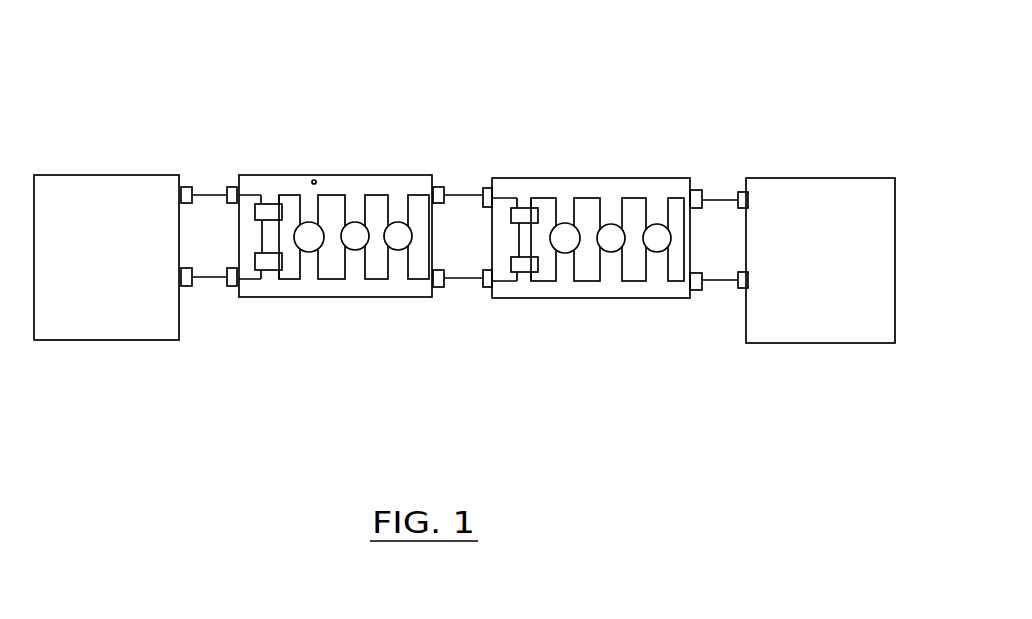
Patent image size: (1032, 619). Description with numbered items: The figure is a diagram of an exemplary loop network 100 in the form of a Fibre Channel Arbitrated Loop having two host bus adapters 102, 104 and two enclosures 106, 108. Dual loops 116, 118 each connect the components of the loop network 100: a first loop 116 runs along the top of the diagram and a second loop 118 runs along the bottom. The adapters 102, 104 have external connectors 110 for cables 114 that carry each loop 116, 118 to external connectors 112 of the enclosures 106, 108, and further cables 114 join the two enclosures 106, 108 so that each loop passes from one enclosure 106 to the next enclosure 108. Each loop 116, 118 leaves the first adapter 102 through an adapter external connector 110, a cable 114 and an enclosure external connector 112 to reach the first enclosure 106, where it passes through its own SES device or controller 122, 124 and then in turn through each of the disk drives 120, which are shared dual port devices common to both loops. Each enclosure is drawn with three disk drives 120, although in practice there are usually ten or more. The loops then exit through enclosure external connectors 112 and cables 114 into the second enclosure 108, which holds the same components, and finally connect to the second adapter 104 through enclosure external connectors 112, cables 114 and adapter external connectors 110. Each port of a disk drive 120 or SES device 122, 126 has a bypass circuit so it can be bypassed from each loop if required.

The loop network 100 is at (140, 62).
The host bus adapter 102 is at (83, 148).
The host bus adapter 104 is at (880, 180).
The enclosure 106 is at (335, 176).
The enclosure 108 is at (610, 177).
The adapter external connector 110 is at (186, 186).
The enclosure external connector 112 is at (234, 186).
The cable 114 is at (212, 192).
The first loop 116 is at (345, 195).
The second loop 118 is at (333, 280).
The disk drive 120 is at (412, 222).
The SES device 122 is at (277, 210).
The SES device 124 is at (268, 271).
The SES device 126 is at (523, 198).